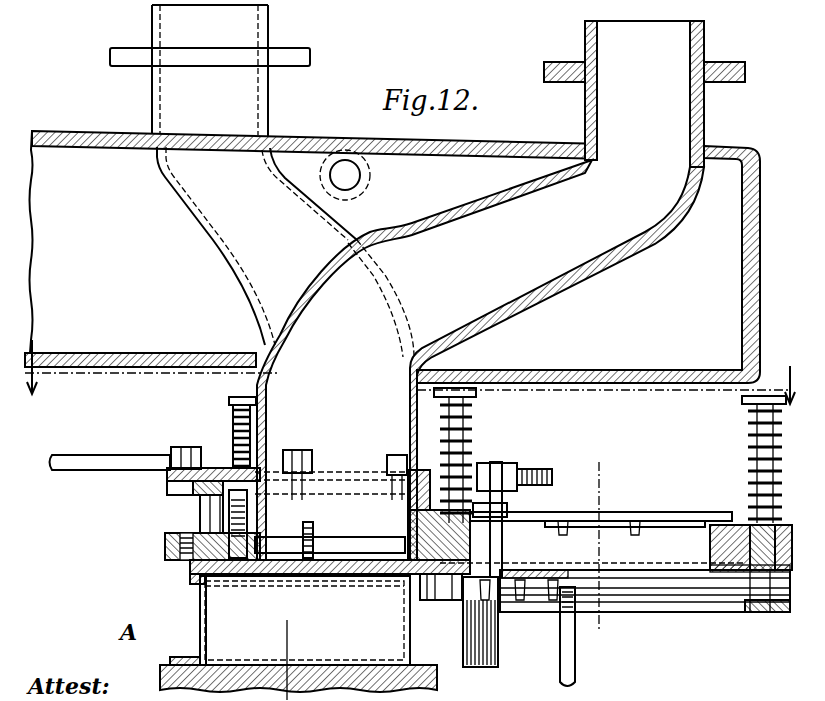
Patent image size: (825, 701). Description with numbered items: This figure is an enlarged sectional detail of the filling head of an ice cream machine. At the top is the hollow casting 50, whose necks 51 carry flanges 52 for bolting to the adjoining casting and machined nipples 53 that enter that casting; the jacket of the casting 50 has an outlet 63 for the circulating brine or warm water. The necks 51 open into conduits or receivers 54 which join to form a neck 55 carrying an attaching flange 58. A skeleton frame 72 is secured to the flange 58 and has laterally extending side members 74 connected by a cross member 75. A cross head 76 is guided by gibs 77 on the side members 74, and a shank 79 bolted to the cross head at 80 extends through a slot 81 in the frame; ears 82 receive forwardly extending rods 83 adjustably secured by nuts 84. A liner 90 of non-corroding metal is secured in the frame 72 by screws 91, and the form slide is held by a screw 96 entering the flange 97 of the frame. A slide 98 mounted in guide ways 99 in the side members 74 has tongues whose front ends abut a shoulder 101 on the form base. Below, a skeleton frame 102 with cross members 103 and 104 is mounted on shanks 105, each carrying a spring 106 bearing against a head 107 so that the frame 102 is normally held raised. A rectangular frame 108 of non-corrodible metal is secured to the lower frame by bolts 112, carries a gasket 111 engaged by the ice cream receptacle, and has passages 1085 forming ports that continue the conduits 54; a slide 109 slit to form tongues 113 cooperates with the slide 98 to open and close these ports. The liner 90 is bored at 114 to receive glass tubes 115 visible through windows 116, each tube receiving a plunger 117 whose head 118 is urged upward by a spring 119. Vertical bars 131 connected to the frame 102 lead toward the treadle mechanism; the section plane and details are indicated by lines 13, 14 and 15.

The section line arrow 13 is at (414, 364).
The inner discharge tube 14 is at (298, 362).
The center line 15 is at (602, 551).
The hollow casting 50 is at (760, 243).
The neck 51 is at (270, 104).
The flange 52 is at (290, 58).
The machined nipple 53 is at (271, 25).
The conduit 54 is at (557, 318).
The neck 55 is at (410, 411).
The attaching flange 58 is at (215, 468).
The outlet 63 is at (371, 180).
The skeleton frame 72 is at (168, 487).
The side member 74 is at (650, 527).
The cross member 75 is at (185, 447).
The cross head 76 is at (512, 507).
The gib 77 is at (600, 514).
The shank 79 is at (500, 556).
The bolt connection 80 is at (537, 470).
The slot 81 is at (605, 563).
The ear 82 is at (487, 505).
The rod 83 is at (70, 455).
The nut 84 is at (490, 464).
The liner 90 is at (403, 507).
The screw 91 is at (296, 536).
The screw 96 is at (190, 566).
The flange 97 is at (165, 545).
The slide 98 is at (547, 572).
The guide way 99 is at (645, 580).
The shoulder 101 is at (192, 578).
The skeleton frame 102 is at (640, 604).
The cross member 103 is at (436, 600).
The cross member 104 is at (766, 612).
The shank 105 is at (755, 435).
The spring 106 is at (748, 412).
The head 107 is at (745, 400).
The rectangular frame 108 is at (197, 585).
The slide 109 is at (536, 601).
The gasket 111 is at (200, 600).
The bolt 112 is at (337, 700).
The tongue 113 is at (301, 580).
The bore 114 is at (305, 530).
The glass tube 115 is at (282, 470).
The window 116 is at (200, 520).
The plunger 117 is at (229, 500).
The head 118 is at (243, 400).
The spring 119 is at (236, 416).
The vertical bar 131 is at (576, 669).
The passage 1085 is at (362, 562).